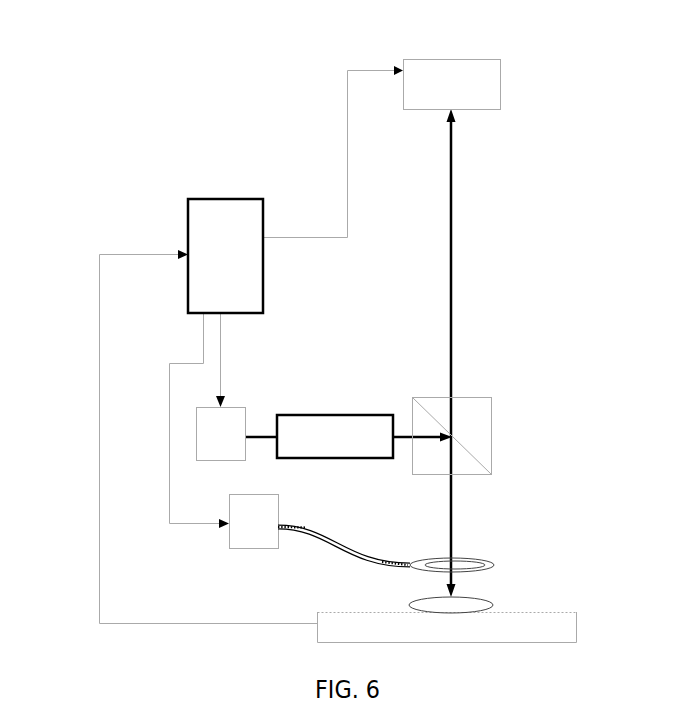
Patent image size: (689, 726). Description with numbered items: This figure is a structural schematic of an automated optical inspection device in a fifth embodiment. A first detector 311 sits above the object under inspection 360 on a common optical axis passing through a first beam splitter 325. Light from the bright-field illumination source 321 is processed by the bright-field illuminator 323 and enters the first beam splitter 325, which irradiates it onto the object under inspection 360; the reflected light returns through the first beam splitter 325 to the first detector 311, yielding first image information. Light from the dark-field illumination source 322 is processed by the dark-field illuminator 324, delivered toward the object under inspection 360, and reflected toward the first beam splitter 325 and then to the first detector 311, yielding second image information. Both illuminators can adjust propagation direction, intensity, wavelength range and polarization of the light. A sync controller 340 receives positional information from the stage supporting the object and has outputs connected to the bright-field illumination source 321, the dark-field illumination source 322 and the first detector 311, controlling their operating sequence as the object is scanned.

The first detector 311 is at (457, 85).
The sync controller 340 is at (234, 222).
The bright-field illumination source 321 is at (227, 432).
The bright-field illuminator 323 is at (315, 437).
The first beam splitter 325 is at (462, 432).
The dark-field illumination source 322 is at (247, 520).
The dark-field illuminator 324 is at (490, 563).
The object under inspection 360 is at (462, 605).